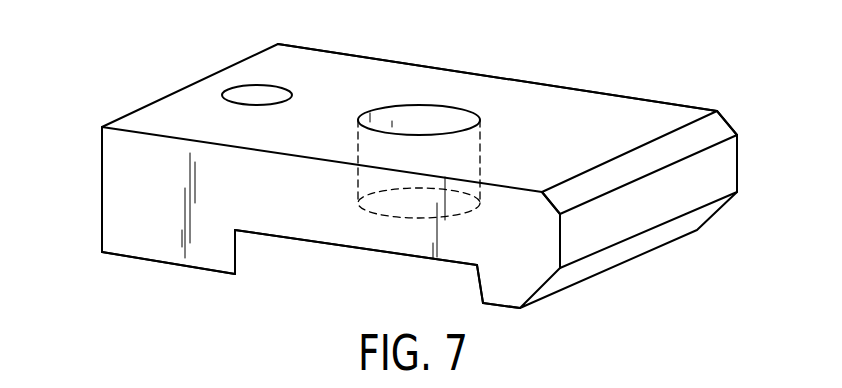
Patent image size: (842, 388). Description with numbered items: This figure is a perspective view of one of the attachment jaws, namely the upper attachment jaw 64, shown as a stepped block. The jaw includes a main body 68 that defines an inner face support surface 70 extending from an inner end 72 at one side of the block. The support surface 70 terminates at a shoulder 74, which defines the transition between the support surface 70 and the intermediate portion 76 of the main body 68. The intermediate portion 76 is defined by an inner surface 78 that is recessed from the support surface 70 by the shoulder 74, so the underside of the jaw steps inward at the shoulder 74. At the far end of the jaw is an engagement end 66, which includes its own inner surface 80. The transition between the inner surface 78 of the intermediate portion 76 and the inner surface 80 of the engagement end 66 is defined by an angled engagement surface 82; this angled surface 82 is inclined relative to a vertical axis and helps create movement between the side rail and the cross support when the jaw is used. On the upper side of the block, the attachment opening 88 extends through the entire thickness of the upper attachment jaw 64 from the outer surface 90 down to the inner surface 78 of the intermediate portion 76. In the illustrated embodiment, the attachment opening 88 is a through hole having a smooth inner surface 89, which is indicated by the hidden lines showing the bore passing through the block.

The upper attachment jaw 64 is at (529, 48).
The engagement end 66 is at (514, 198).
The main body 68 is at (653, 112).
The inner face support surface 70 is at (172, 262).
The inner end 72 is at (102, 190).
The shoulder 74 is at (259, 249).
The intermediate portion 76 is at (311, 171).
The inner surface 78 is at (360, 252).
The inner surface 80 is at (502, 310).
The angled engagement surface 82 is at (480, 287).
The attachment opening 88 is at (415, 107).
The smooth inner surface 89 is at (455, 118).
The outer surface 90 is at (312, 62).